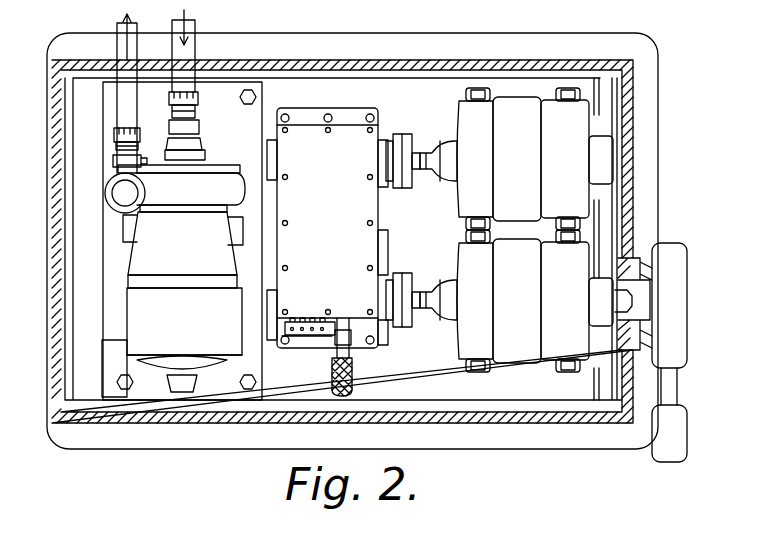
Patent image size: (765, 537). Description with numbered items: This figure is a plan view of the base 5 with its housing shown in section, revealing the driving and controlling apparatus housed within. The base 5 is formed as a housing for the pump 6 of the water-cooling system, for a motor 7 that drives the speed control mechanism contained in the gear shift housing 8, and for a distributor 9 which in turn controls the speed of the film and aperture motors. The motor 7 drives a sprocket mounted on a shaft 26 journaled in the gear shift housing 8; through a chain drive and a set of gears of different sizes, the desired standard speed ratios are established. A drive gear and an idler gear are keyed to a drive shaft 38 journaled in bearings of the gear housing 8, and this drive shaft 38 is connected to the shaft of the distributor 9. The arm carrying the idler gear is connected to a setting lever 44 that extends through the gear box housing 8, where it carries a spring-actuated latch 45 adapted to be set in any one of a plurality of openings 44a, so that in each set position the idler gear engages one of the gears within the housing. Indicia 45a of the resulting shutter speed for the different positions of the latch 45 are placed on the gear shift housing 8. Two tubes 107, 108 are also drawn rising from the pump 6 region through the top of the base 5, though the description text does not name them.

The base 5 is at (90, 435).
The pump 6 is at (140, 258).
The motor 7 is at (567, 142).
The gear shift housing 8 is at (308, 128).
The distributor 9 is at (527, 355).
The shaft 26 is at (393, 140).
The drive shaft 38 is at (393, 330).
The setting lever 44 is at (352, 352).
The openings 44a is at (310, 345).
The spring-actuated latch 45 is at (353, 385).
The indicia 45a is at (310, 325).
The inlet tube 107 is at (196, 50).
The outlet tube 108 is at (118, 48).